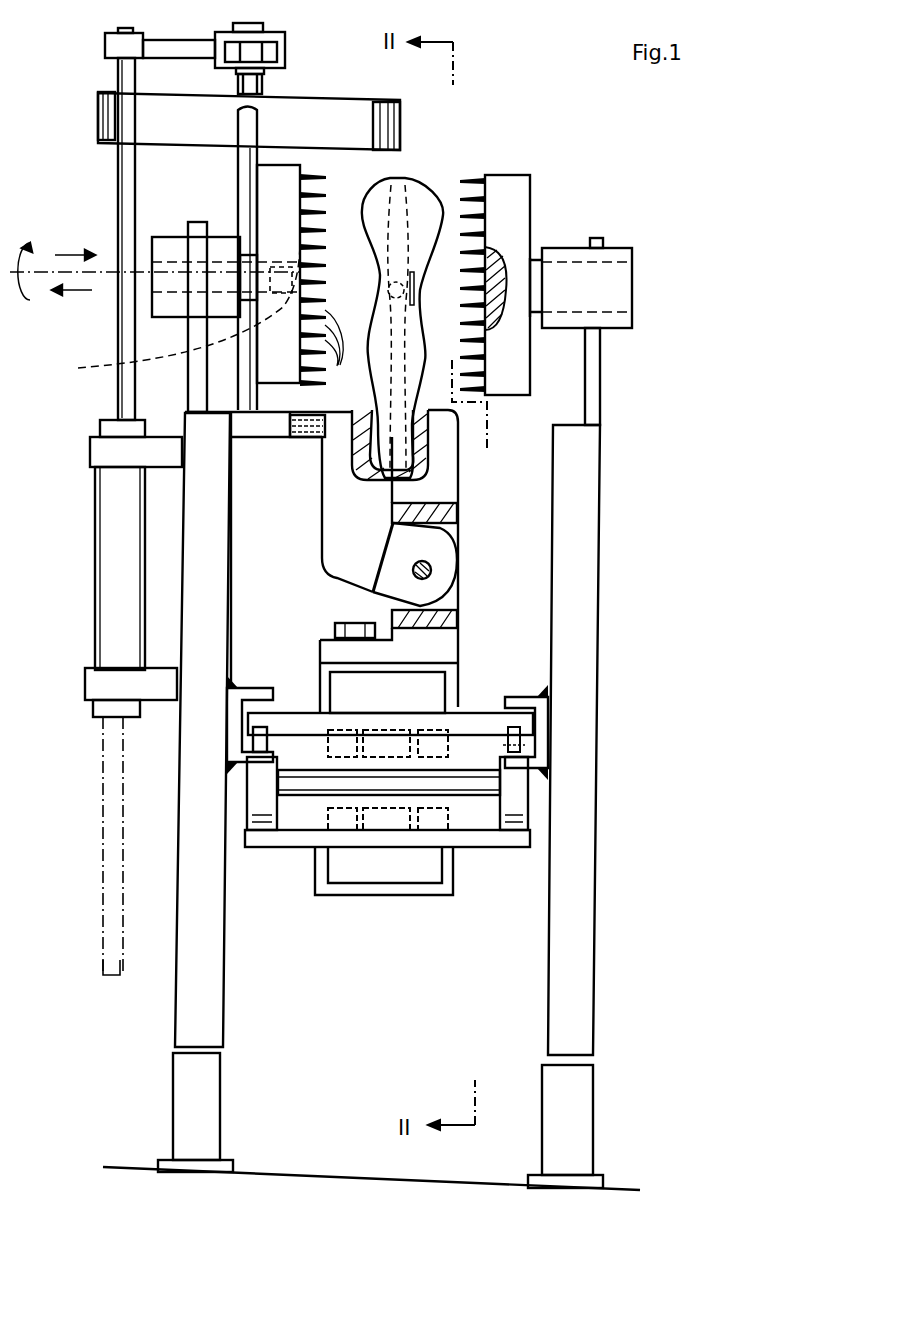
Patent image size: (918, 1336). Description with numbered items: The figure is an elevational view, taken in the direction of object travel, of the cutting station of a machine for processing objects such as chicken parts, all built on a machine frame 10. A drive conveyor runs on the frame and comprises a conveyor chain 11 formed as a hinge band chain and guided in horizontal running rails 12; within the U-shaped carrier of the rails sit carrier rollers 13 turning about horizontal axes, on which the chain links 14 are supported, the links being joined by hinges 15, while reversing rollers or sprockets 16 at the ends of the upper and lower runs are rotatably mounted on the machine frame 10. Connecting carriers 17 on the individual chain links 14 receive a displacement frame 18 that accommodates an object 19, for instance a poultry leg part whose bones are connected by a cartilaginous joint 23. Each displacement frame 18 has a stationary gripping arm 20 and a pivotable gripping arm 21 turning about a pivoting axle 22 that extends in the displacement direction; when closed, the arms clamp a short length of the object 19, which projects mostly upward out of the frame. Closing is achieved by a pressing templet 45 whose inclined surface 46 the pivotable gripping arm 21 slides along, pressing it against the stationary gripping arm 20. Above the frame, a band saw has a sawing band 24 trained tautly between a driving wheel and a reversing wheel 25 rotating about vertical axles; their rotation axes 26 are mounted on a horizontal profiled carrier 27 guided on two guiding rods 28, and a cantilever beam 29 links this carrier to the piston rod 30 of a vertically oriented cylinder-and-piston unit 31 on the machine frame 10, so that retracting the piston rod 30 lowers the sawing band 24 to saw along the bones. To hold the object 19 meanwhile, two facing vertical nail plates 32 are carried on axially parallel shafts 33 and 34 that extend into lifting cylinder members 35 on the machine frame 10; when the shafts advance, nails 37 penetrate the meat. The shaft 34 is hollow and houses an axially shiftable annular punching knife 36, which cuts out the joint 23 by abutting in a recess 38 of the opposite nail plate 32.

The machine frame 10 is at (565, 1001).
The conveyor chain 11 is at (485, 862).
The running rails 12 is at (545, 715).
The carrier rollers 13 is at (512, 760).
The chain links 14 is at (483, 725).
The hinges 15 is at (335, 745).
The reversing rollers or sprockets 16 is at (262, 800).
The connecting carriers 17 is at (447, 670).
The displacement frame 18 is at (490, 605).
The object 19 is at (423, 195).
The stationary gripping arm 20 is at (447, 478).
The pivotable gripping arm 21 is at (335, 530).
The pivoting axle 22 is at (395, 570).
The cartilaginous joint 23 is at (388, 285).
The sawing band 24 is at (100, 92).
The reversing wheel 25 is at (150, 115).
The rotation axes 26 is at (255, 80).
The profiled carrier 27 is at (278, 52).
The guiding rods 28 is at (245, 160).
The cantilever beam 29 is at (110, 43).
The piston rod 30 is at (125, 175).
The cylinder-and-piston unit 31 is at (120, 516).
The nail plates 32 is at (280, 180).
The shaft 33 is at (537, 262).
The shaft 34 is at (258, 240).
The lifting cylinder members 35 is at (162, 305).
The annular punching knife 36 is at (110, 372).
The nails 37 is at (462, 195).
The recess 38 is at (495, 265).
The pressing templet 45 is at (260, 440).
The inclined surface 46 is at (305, 440).